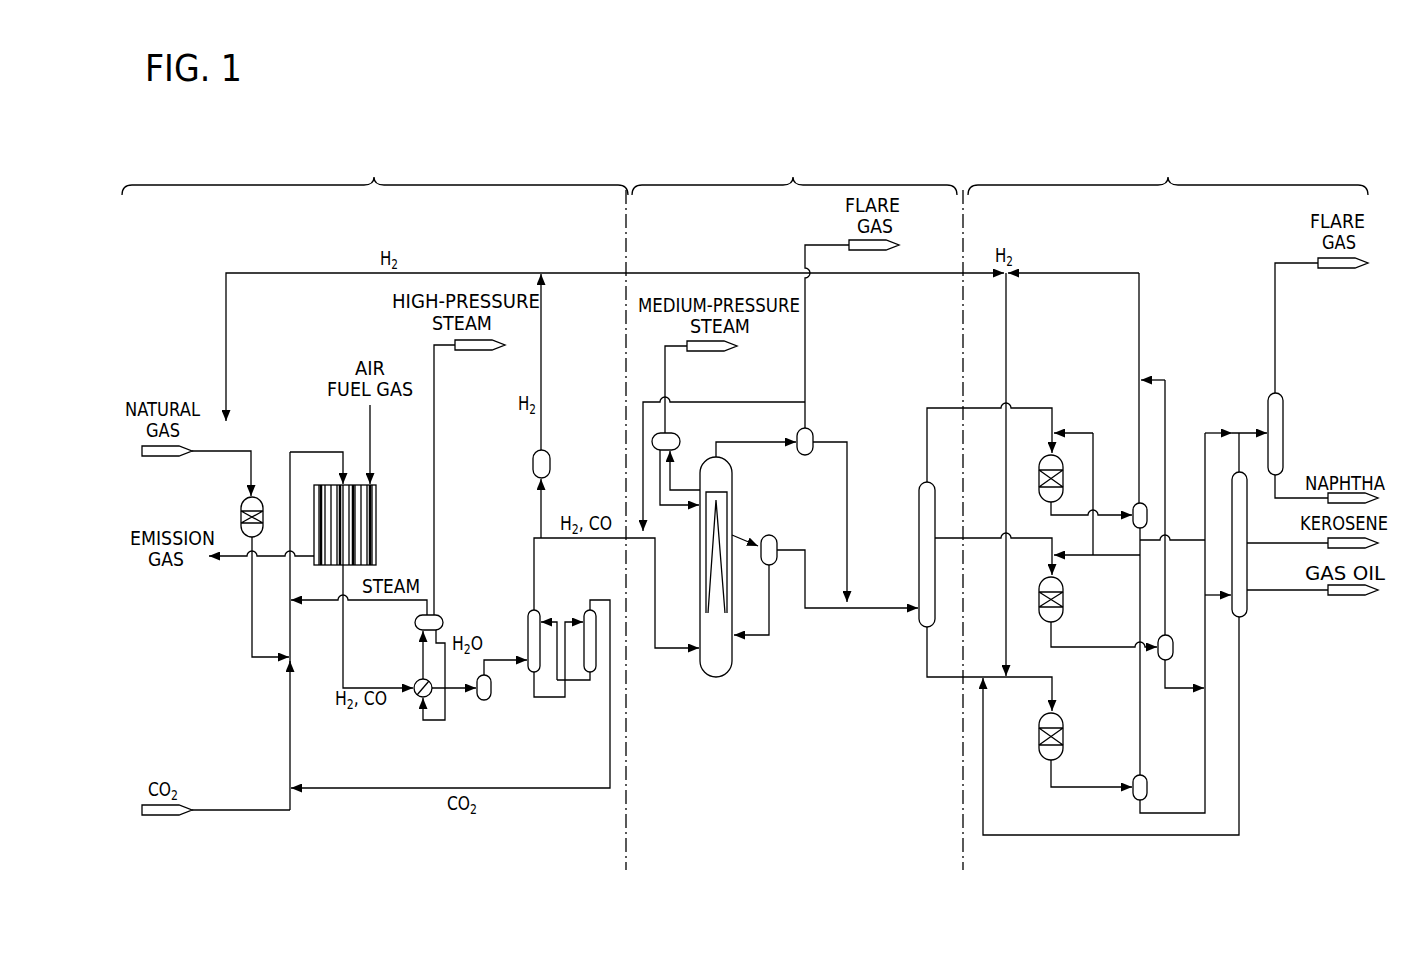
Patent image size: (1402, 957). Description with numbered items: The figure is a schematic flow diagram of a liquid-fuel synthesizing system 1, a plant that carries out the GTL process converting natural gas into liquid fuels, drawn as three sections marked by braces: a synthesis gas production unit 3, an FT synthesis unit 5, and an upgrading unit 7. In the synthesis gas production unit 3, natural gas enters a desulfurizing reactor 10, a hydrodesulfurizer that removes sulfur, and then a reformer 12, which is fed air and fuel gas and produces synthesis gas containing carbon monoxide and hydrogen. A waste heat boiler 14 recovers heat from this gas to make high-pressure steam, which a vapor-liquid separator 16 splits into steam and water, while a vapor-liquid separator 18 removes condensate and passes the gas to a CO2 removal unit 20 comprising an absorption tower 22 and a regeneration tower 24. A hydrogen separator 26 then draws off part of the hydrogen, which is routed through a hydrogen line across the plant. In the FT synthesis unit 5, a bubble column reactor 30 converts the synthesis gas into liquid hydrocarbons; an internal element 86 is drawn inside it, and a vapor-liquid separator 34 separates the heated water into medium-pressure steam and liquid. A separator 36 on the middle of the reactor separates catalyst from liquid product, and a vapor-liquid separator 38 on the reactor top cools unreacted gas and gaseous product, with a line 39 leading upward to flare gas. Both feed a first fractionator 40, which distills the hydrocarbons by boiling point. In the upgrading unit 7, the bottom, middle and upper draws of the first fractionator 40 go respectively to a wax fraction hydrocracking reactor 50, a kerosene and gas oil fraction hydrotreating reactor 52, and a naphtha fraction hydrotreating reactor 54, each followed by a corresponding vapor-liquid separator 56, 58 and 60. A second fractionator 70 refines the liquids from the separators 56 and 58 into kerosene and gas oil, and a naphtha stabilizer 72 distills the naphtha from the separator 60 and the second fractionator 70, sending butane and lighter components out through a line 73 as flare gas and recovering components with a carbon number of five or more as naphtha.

The liquid-fuel synthesizing system 1 is at (963, 141).
The synthesis gas production unit 3 is at (375, 166).
The FT synthesis unit 5 is at (794, 166).
The upgrading unit 7 is at (1168, 166).
The desulfurizing reactor 10 is at (241, 506).
The reformer 12 is at (377, 495).
The waste heat boiler 14 is at (419, 697).
The vapor-liquid separator 16 is at (437, 615).
The vapor-liquid separator 18 is at (483, 702).
The CO2 removal unit 20 is at (557, 694).
The absorption tower 22 is at (532, 673).
The regeneration tower 24 is at (585, 674).
The hydrogen separator 26 is at (549, 453).
The bubble column reactor 30 is at (739, 576).
The vapor-liquid separator 34 is at (680, 442).
The separator 36 is at (777, 538).
The vapor-liquid separator 38 is at (815, 432).
The flare gas line 39 is at (807, 372).
The first fractionator 40 is at (918, 513).
The wax fraction hydrocracking reactor 50 is at (1065, 732).
The kerosene and gas oil fraction hydrotreating reactor 52 is at (1063, 592).
The naphtha fraction hydrotreating reactor 54 is at (1063, 465).
The vapor-liquid separator 56 is at (1148, 782).
The vapor-liquid separator 58 is at (1168, 636).
The vapor-liquid separator 60 is at (1145, 503).
The second fractionator 70 is at (1248, 605).
The naphtha stabilizer 72 is at (1283, 410).
The flare gas line 73 is at (1277, 318).
The heat transfer tube 86 is at (728, 503).